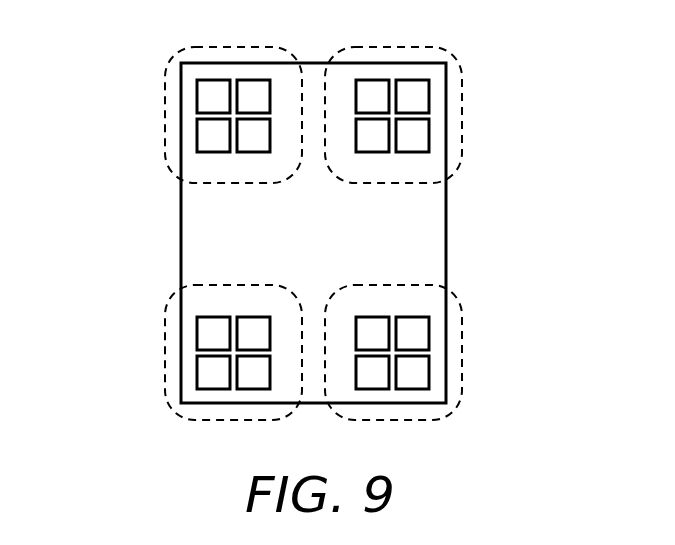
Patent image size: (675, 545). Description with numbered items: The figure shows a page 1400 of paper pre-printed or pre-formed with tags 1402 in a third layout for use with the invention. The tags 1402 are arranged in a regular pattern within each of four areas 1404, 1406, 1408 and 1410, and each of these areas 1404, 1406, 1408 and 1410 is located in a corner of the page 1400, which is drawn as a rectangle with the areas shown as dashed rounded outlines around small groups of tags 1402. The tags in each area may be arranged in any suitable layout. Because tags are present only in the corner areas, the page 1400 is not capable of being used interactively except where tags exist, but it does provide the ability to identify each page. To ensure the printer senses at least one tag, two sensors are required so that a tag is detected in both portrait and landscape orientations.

The page 1400 is at (446, 210).
The tag 1402 is at (429, 92).
The area 1404 is at (447, 62).
The area 1406 is at (462, 335).
The area 1408 is at (165, 340).
The area 1410 is at (177, 61).